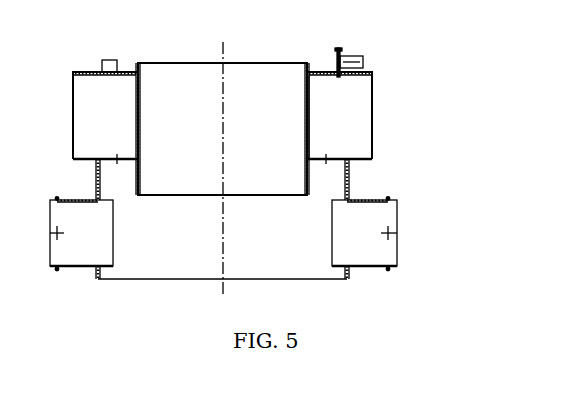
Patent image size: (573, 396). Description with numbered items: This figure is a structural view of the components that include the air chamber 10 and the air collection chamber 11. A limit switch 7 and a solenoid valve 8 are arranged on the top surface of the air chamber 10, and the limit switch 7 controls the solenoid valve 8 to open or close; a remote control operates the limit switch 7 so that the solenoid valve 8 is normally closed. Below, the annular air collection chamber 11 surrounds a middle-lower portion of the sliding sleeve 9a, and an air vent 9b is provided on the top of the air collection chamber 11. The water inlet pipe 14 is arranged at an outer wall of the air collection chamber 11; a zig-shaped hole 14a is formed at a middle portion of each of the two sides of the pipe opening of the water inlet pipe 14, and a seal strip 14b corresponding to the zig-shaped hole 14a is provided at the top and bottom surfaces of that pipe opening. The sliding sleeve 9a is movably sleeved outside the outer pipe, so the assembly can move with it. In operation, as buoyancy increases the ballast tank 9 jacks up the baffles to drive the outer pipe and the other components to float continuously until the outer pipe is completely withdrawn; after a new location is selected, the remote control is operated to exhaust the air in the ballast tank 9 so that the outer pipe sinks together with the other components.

The limit switch 7 is at (117, 63).
The solenoid valve 8 is at (353, 58).
The ballast tank 9 is at (375, 75).
The air chamber 10 is at (345, 105).
The sliding sleeve 9a is at (317, 130).
The air vent 9b is at (327, 158).
The air collection chamber 11 is at (328, 176).
The water inlet pipe 14 is at (377, 215).
The zig-shaped hole 14a is at (395, 232).
The seal strip 14b is at (400, 268).